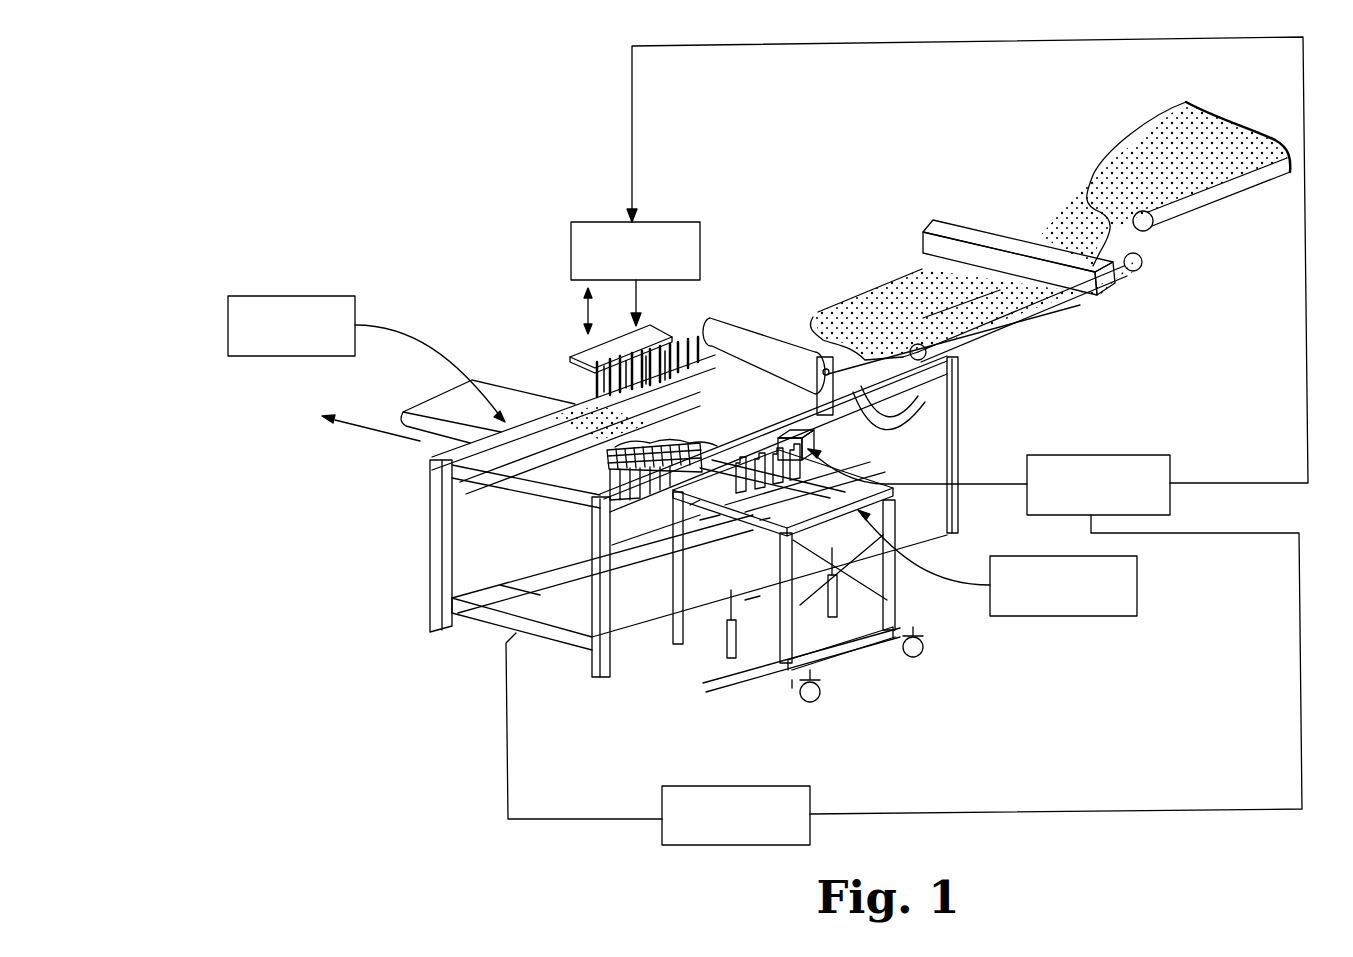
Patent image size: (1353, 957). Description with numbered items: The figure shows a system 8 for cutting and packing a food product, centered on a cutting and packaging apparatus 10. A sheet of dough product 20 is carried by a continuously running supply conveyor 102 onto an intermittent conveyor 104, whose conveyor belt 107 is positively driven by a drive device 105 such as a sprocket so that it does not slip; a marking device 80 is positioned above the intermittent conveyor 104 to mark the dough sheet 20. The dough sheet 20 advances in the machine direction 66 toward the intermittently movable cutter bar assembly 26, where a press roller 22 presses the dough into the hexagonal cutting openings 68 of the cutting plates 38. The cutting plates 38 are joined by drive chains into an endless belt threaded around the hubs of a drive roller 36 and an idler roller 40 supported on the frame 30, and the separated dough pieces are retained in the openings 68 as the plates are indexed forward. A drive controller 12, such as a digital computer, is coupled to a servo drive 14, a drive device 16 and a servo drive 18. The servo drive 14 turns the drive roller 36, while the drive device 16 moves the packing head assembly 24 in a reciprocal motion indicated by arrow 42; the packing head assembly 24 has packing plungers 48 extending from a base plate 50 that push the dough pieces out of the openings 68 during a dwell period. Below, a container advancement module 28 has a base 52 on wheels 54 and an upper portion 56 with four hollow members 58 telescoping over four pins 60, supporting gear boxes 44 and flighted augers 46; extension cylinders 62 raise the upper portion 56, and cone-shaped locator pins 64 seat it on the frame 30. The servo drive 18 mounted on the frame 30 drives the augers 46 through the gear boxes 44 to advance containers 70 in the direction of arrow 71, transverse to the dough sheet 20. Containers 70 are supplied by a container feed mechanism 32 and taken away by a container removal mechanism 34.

The system 8 is at (487, 208).
The cutting and packaging apparatus 10 is at (729, 186).
The drive controller 12 is at (1173, 504).
The servo drive 14 is at (810, 803).
The drive device 16 is at (703, 249).
The servo drive 18 is at (885, 482).
The sheet of dough product 20 is at (1130, 152).
The press roller 22 is at (742, 312).
The packing head assembly 24 is at (572, 338).
The cutter bar assembly 26 is at (925, 424).
The container advancement module 28 is at (915, 613).
The frame 30 is at (429, 494).
The container feed mechanism 32 is at (1137, 603).
The container removal mechanism 34 is at (297, 296).
The drive roller 36 is at (600, 548).
The cutting plates 38 is at (689, 408).
The idler roller 40 is at (882, 433).
The arrow indicating reciprocal motion 42 is at (580, 300).
The gear boxes 44 is at (690, 505).
The flighted augers 46 is at (700, 520).
The packing plungers 48 is at (585, 363).
The base plate 50 is at (650, 325).
The base 52 is at (858, 672).
The wheels 54 is at (915, 656).
The upper portion 56 is at (732, 655).
The hollow members 58 is at (760, 640).
The pins 60 is at (792, 688).
The extension cylinders 62 is at (745, 600).
The locator pins 64 is at (760, 520).
The machine direction 66 is at (910, 300).
The cutting openings 68 is at (590, 407).
The containers 70 is at (585, 478).
The arrow indicating container advancement direction 71 is at (382, 433).
The marking device 80 is at (956, 224).
The supply conveyor 102 is at (1230, 215).
The intermittent conveyor 104 is at (1052, 316).
The drive device 105 is at (930, 358).
The conveyor belt 107 is at (1004, 322).